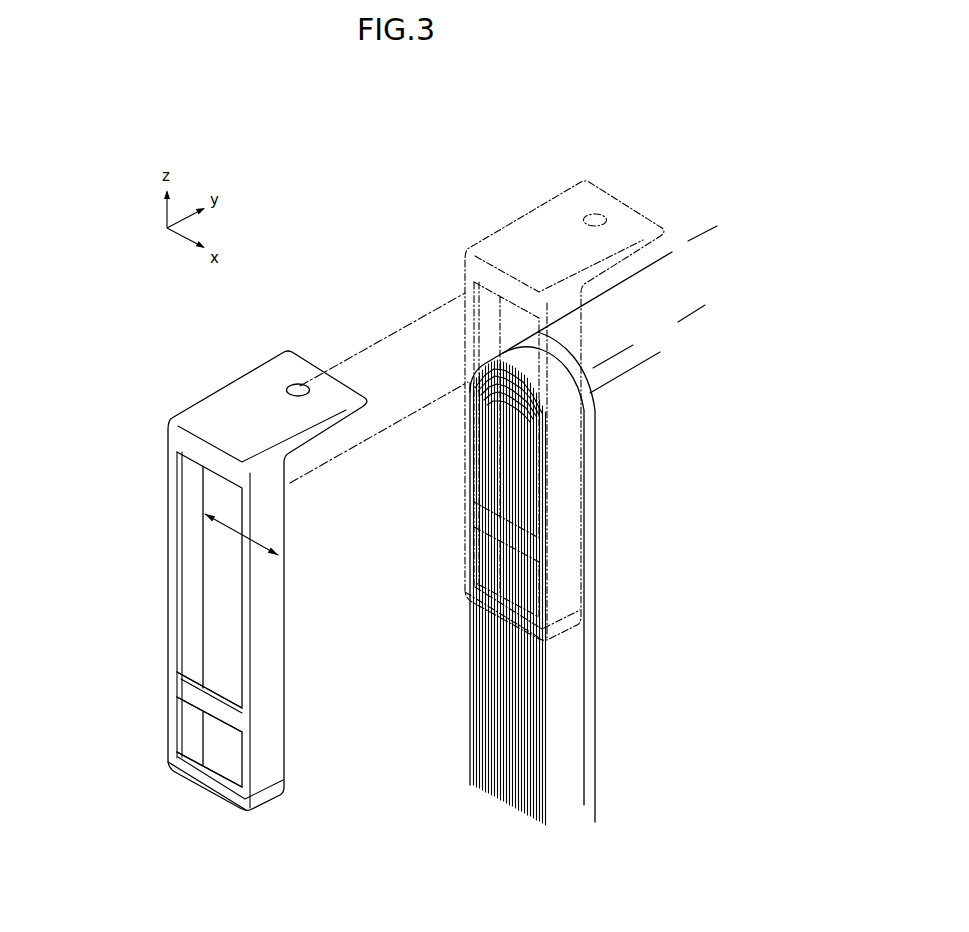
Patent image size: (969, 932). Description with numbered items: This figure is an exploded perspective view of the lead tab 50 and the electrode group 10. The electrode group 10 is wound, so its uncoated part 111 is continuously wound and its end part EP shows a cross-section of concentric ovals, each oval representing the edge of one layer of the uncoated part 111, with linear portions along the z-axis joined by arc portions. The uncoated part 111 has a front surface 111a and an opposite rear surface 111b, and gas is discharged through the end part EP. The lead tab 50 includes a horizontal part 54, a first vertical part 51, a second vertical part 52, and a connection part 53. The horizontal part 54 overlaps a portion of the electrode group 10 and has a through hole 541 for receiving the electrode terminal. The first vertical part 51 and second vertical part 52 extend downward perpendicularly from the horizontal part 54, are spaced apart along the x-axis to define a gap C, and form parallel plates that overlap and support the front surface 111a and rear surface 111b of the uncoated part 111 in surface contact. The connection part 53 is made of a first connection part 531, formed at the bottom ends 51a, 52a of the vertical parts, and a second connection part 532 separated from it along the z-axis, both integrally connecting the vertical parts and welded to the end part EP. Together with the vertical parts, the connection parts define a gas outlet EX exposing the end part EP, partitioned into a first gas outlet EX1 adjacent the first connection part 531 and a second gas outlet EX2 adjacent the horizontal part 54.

The electrode group 10 is at (556, 493).
The lead tab 50 is at (355, 520).
The first vertical part 51 is at (297, 660).
The bottom end of the first vertical part 51a is at (270, 800).
The second vertical part 52 is at (240, 645).
The bottom end of the second vertical part 52a is at (194, 760).
The connection part 53 is at (274, 741).
The first connection part 531 is at (266, 800).
The second connection part 532 is at (232, 716).
The horizontal part 54 is at (268, 378).
The through hole 541 is at (292, 380).
The uncoated part 111 is at (549, 578).
The front surface 111a is at (572, 788).
The rear surface 111b is at (469, 690).
The end part EP is at (540, 745).
The gap C is at (222, 528).
The gas outlet EX is at (118, 696).
The first gas outlet EX1 is at (186, 735).
The second gas outlet EX2 is at (186, 658).